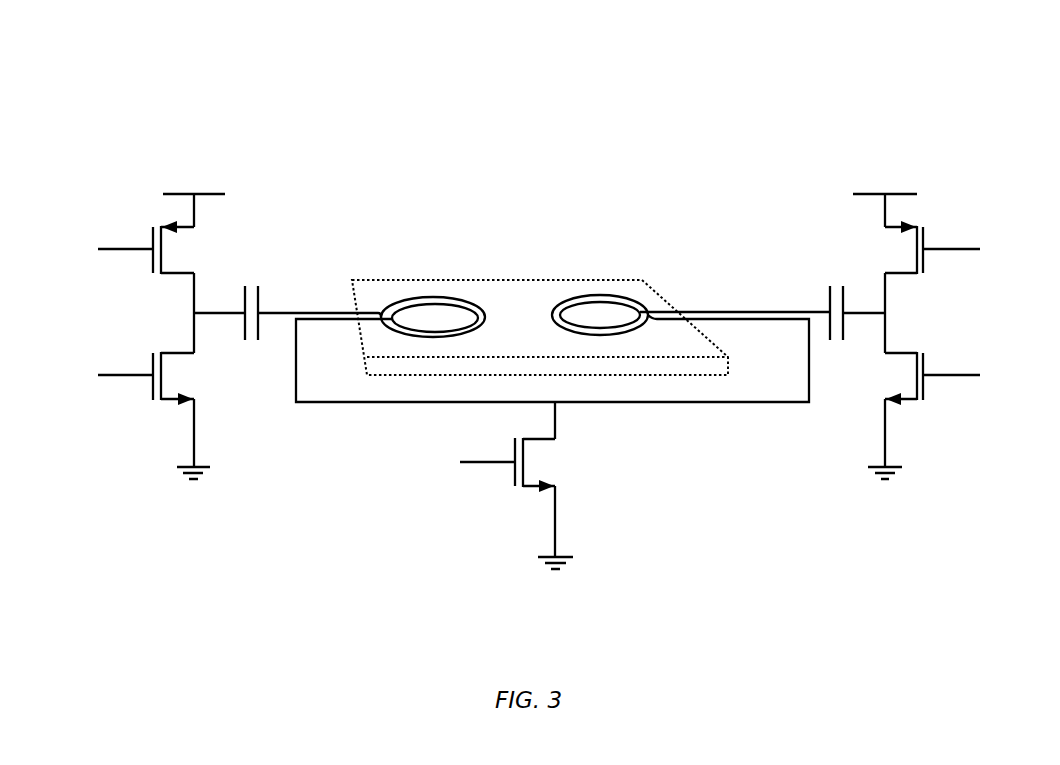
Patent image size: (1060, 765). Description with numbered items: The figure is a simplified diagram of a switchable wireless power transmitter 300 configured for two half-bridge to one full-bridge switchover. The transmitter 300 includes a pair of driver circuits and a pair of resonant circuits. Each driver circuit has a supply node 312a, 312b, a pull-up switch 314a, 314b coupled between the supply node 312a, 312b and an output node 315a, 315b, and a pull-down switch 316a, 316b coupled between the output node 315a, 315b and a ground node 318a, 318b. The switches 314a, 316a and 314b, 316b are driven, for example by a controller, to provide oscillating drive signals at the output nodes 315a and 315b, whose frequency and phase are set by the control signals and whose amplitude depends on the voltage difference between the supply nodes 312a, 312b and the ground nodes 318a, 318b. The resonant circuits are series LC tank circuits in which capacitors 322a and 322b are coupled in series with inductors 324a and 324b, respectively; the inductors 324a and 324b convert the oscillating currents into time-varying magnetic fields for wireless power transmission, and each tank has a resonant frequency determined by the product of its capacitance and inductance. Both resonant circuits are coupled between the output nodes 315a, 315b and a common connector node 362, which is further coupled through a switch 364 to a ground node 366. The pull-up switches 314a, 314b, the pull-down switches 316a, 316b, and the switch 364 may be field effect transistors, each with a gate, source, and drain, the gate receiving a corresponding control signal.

The switchable wireless power transmitter 300 is at (70, 55).
The supply node 312a is at (194, 170).
The supply node 312b is at (885, 185).
The pull-up switch 314a is at (131, 240).
The pull-up switch 314b is at (948, 240).
The output node 315a is at (187, 313).
The output node 315b is at (895, 313).
The pull-down switch 316a is at (131, 367).
The pull-down switch 316b is at (948, 365).
The ground node 318a is at (194, 505).
The ground node 318b is at (885, 485).
The capacitor 322a is at (248, 270).
The capacitor 322b is at (838, 268).
The inductor 324a is at (423, 262).
The inductor 324b is at (590, 291).
The connector node 362 is at (367, 405).
The switch 364 is at (492, 452).
The ground node 366 is at (555, 580).